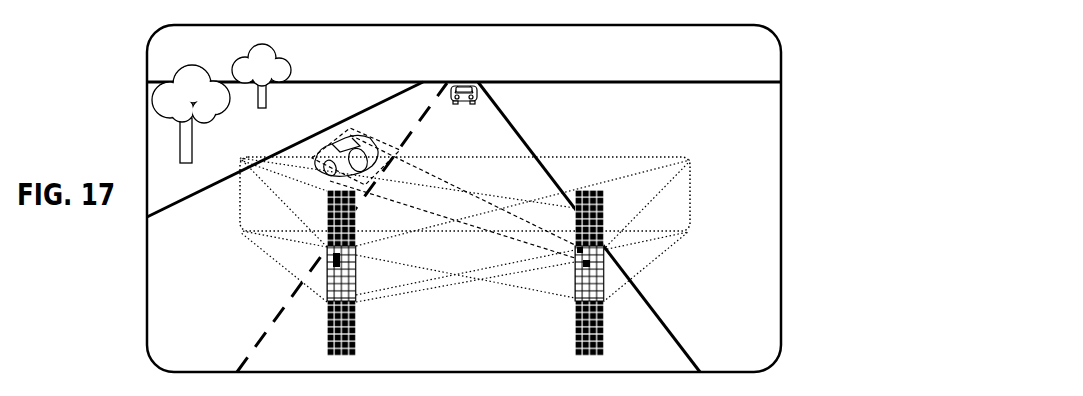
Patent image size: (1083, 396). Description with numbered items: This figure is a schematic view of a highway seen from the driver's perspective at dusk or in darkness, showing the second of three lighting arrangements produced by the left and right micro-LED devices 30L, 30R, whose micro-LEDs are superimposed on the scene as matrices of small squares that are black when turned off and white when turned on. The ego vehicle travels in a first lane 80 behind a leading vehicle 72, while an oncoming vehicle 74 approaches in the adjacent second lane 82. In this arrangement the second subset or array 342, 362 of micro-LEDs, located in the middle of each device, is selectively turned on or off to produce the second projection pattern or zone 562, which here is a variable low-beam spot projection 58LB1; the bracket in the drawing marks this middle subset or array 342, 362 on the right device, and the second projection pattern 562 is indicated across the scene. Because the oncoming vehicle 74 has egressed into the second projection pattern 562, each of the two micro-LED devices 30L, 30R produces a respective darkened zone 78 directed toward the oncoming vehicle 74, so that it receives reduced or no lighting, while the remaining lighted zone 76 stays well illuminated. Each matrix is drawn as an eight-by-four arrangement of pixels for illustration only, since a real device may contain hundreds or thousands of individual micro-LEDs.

The leading vehicle 72 is at (465, 82).
The oncoming vehicle 74 is at (371, 143).
The lighted zone 76 is at (608, 167).
The darkened zone 78 is at (313, 150).
The first lane 80 is at (478, 342).
The second lane 82 is at (230, 274).
The left micro-LED device 30L is at (262, 298).
The right micro-LED device 30R is at (664, 273).
The second subset of micro-LEDs 342 is at (656, 273).
The second array of micro-LEDs 362 is at (610, 247).
The second projection pattern 562 is at (551, 198).
The low-beam pattern 58LB1 is at (724, 189).